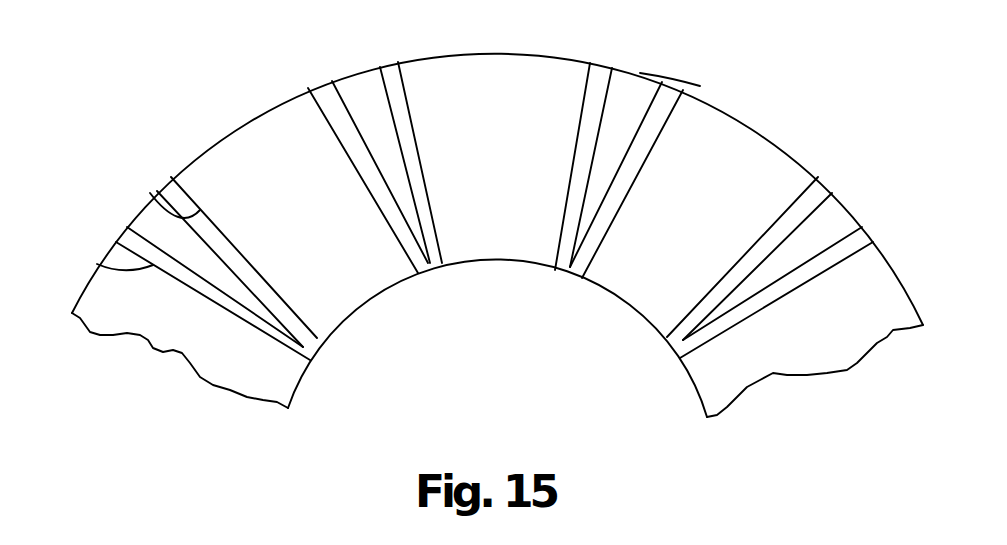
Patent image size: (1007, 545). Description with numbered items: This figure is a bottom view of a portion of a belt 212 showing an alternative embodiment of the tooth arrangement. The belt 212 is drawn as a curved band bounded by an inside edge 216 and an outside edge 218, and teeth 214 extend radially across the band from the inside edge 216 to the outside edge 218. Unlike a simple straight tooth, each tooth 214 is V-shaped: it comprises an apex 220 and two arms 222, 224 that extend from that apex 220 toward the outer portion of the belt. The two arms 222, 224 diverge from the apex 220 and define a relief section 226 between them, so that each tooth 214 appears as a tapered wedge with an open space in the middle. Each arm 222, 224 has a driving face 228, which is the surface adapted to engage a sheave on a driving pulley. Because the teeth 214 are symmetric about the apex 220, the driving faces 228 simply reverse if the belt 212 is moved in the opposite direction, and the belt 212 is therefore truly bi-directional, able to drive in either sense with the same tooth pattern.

The belt 212 is at (671, 78).
The tooth 214 is at (310, 360).
The inside edge 216 is at (693, 383).
The outside edge 218 is at (770, 138).
The apex 220 is at (321, 338).
The arm 222 is at (152, 245).
The arm 224 is at (157, 191).
The relief section 226 is at (158, 230).
The driving face 228 is at (97, 264).